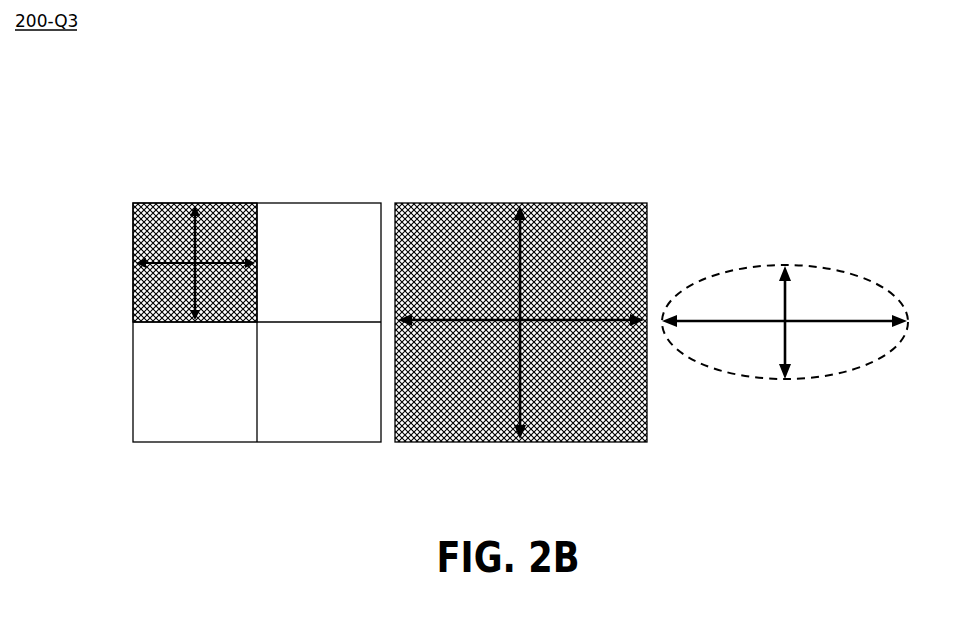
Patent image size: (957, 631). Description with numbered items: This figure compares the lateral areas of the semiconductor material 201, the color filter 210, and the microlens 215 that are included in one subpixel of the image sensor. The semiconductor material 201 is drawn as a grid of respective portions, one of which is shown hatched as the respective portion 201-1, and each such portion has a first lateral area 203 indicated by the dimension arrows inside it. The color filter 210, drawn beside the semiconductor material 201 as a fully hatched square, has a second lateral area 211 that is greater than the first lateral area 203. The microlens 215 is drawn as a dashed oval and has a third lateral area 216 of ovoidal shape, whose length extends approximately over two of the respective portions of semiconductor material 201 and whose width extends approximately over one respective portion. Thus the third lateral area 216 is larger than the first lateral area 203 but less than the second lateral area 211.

The semiconductor material 201 is at (133, 191).
The respective portion of semiconductor material 201-1 is at (127, 221).
The first lateral area 203 is at (195, 263).
The color filter 210 is at (398, 192).
The second lateral area 211 is at (521, 322).
The microlens 215 is at (737, 198).
The third lateral area 216 is at (784, 322).